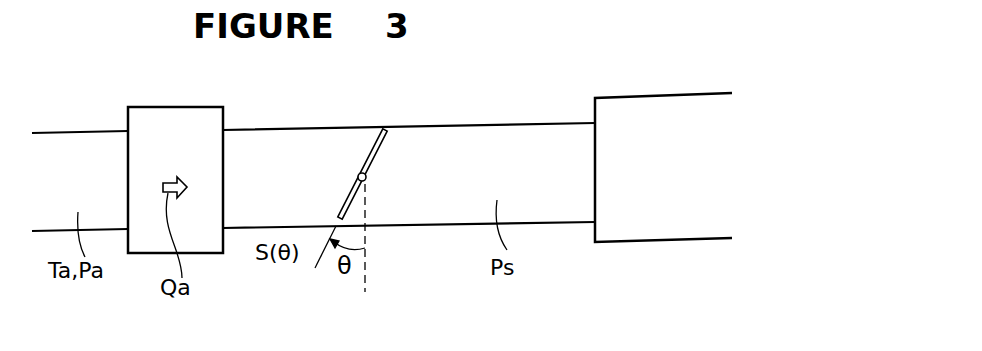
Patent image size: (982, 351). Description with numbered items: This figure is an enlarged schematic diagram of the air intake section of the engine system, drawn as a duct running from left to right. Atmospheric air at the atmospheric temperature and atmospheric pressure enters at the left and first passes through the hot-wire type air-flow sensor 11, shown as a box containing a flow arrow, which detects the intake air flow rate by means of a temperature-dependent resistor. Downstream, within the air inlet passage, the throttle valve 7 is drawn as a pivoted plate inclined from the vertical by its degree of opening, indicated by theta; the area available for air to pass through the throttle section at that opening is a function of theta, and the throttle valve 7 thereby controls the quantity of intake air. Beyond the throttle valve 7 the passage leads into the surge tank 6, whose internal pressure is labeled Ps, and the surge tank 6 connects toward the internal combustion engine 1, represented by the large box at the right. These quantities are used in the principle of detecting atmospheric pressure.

The internal combustion engine 1 is at (642, 128).
The surge tank 6 is at (520, 150).
The throttle valve 7 is at (372, 152).
The hot-wire type air-flow sensor 11 is at (172, 127).